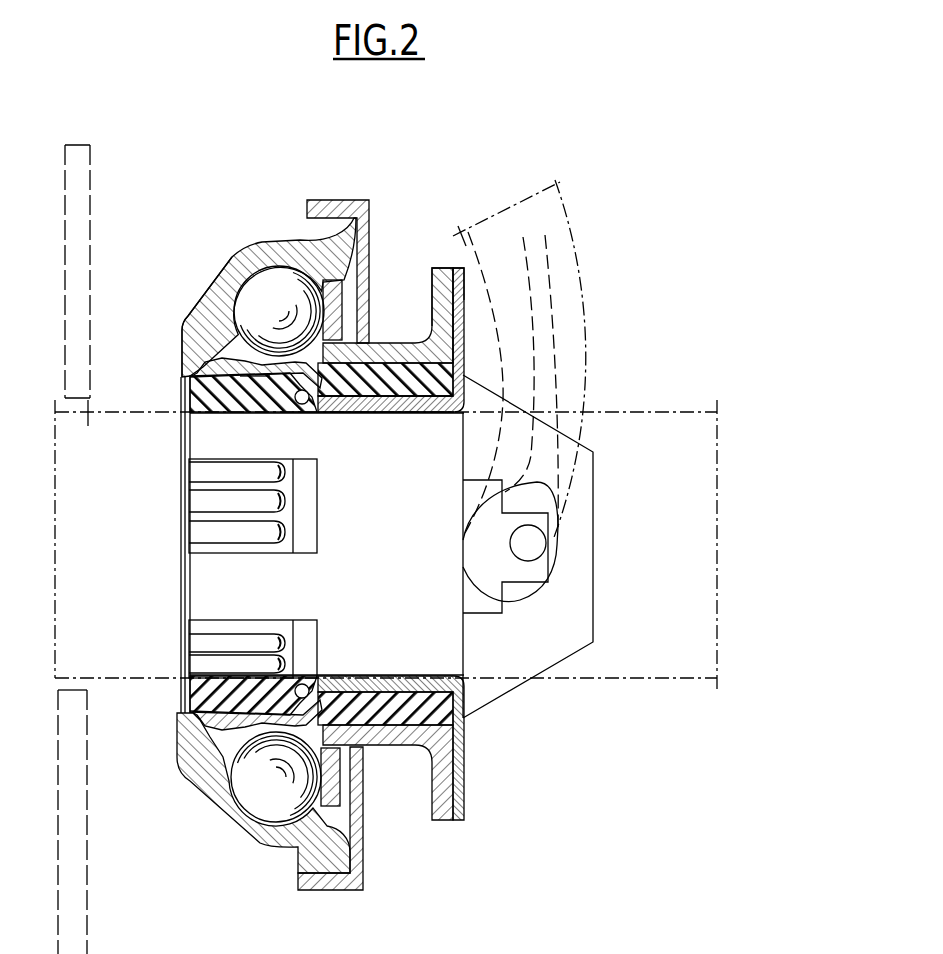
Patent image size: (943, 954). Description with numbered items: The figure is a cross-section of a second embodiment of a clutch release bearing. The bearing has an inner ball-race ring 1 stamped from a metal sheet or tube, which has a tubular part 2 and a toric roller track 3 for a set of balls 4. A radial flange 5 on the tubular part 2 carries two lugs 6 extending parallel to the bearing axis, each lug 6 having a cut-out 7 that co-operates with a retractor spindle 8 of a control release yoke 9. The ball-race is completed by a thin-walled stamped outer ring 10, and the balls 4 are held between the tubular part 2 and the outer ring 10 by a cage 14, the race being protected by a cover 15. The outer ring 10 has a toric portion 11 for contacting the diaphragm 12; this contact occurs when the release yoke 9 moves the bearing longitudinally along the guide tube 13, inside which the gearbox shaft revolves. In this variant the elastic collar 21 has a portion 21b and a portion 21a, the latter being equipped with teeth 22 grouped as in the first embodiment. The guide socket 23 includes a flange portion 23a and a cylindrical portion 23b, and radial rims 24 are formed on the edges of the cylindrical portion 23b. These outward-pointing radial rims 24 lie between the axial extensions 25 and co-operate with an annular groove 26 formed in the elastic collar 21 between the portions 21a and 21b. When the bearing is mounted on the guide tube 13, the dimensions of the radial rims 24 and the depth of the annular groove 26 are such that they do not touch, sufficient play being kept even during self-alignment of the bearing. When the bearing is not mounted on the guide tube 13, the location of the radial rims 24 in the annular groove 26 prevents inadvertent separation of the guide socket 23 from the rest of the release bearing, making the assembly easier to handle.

The inner ball-race ring 1 is at (388, 284).
The tubular part 2 is at (388, 284).
The toric roller track 3 is at (252, 363).
The balls 4 is at (270, 290).
The radial flange 5 is at (437, 272).
The lugs 6 is at (573, 632).
The cut-out 7 is at (550, 578).
The retractor spindle 8 is at (537, 545).
The control release yoke 9 is at (548, 333).
The outer ring 10 is at (257, 297).
The toric portion 11 is at (190, 330).
The diaphragm 12 is at (78, 215).
The guide tube 13 is at (102, 436).
The cage 14 is at (343, 293).
The cover 15 is at (336, 201).
The elastic collar 21 is at (253, 412).
The portion of the elastic collar 21a is at (250, 412).
The portion of the elastic collar 21b is at (366, 380).
The teeth 22 is at (197, 532).
The guide socket 23 is at (421, 347).
The flange portion 23a is at (468, 304).
The cylindrical portion 23b is at (426, 404).
The radial rims 24 is at (298, 412).
The axial extensions 25 is at (197, 452).
The annular groove 26 is at (307, 404).